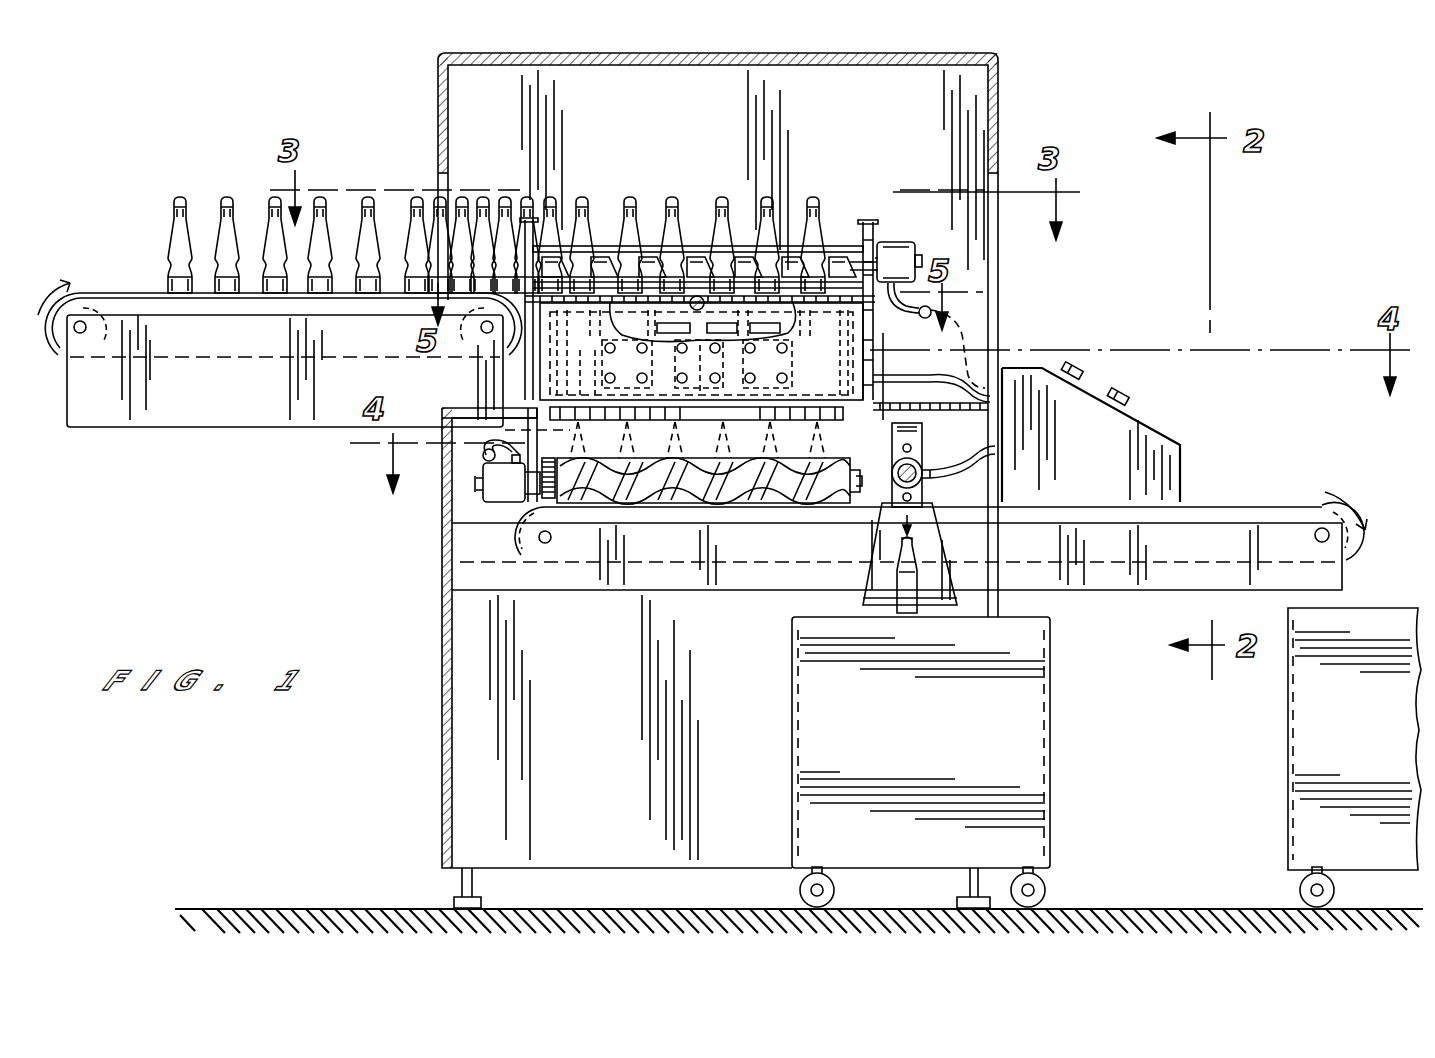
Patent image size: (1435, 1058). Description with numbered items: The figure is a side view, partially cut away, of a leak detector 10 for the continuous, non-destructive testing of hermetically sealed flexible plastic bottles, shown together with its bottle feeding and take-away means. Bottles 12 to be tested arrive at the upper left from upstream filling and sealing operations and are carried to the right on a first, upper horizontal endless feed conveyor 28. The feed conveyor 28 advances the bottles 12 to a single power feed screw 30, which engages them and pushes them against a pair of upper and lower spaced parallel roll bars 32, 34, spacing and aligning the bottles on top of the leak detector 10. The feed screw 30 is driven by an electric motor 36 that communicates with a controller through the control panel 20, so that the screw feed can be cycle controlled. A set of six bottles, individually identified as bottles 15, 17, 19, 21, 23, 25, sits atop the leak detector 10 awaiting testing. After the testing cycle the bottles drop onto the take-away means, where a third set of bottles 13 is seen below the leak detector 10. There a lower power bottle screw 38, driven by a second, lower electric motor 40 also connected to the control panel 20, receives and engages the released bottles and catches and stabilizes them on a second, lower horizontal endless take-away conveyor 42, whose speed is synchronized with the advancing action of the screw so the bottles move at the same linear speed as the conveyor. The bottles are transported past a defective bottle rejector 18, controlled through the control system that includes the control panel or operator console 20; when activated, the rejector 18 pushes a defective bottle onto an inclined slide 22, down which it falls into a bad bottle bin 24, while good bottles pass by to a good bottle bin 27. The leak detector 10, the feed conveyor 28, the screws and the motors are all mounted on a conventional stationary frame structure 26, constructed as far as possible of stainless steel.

The apparatus or leak detector 10 is at (985, 85).
The bottles 12 is at (226, 197).
The third set of bottles 13 is at (520, 432).
The bottle 15 is at (573, 197).
The bottle 17 is at (627, 197).
The defective bottle rejector 18 is at (913, 437).
The bottle 19 is at (666, 200).
The control panel or operator console 20 is at (1137, 432).
The bottle 21 is at (728, 205).
The inclined slide 22 is at (850, 597).
The bottle 23 is at (775, 222).
The bad bottle bin or receptacle 24 is at (1050, 706).
The bottle 25 is at (822, 222).
The stationary frame structure 26 is at (441, 494).
The good bottle bin 27 is at (1288, 806).
The feed conveyor 28 is at (128, 292).
The power feed screw 30 is at (604, 262).
The upper roll bar 32 is at (697, 252).
The lower roll bar 34 is at (846, 248).
The electric motor 36 is at (906, 250).
The lower power bottle screw 38 is at (823, 482).
The lower electric motor 40 is at (493, 490).
The take-away conveyor 42 is at (1255, 503).